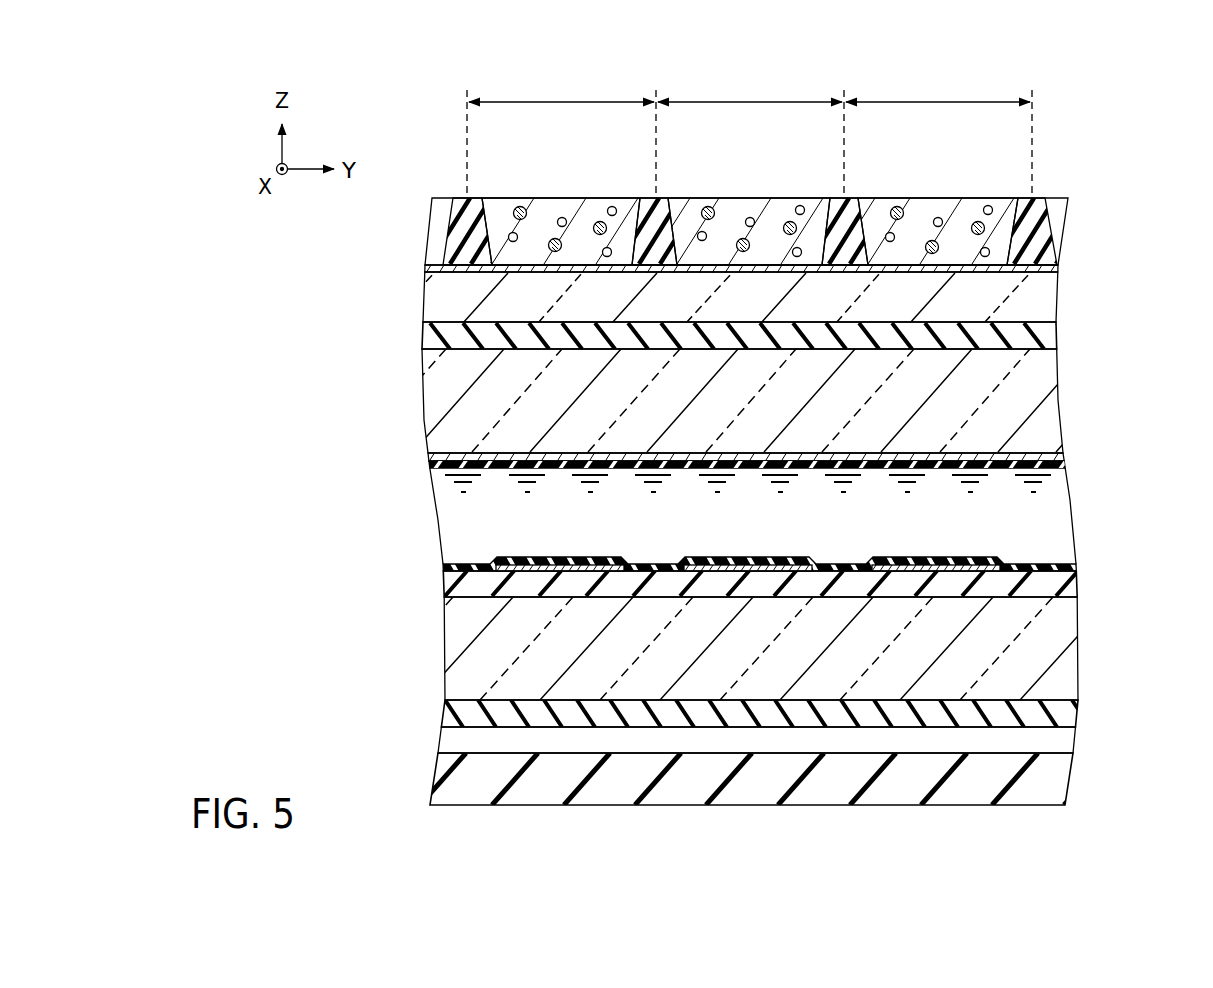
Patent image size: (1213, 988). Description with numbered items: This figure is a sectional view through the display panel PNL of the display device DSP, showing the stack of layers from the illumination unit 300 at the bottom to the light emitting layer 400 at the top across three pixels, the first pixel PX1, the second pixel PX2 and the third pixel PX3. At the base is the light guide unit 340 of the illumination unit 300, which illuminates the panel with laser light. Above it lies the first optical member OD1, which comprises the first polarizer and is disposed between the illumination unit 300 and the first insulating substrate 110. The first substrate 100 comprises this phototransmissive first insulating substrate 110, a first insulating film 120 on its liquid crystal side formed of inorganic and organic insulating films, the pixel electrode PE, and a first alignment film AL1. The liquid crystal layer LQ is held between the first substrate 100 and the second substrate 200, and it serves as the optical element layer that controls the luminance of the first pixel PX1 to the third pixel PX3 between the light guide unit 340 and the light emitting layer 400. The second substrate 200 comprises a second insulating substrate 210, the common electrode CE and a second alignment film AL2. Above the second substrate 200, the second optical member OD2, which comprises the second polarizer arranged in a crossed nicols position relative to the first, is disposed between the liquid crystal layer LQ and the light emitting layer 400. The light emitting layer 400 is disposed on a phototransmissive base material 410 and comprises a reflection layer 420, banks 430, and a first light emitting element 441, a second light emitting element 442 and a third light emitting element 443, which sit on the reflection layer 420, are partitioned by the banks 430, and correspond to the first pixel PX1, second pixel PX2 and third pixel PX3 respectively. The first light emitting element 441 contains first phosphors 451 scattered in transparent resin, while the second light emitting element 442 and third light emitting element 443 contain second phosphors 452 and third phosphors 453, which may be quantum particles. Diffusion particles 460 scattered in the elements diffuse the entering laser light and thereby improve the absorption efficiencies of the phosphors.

The display device DSP is at (1143, 124).
The display panel PNL is at (296, 445).
The first pixel PX1 is at (561, 135).
The second pixel PX2 is at (751, 135).
The third pixel PX3 is at (939, 135).
The light emitting layer 400 is at (410, 229).
The first light emitting element 441 is at (498, 188).
The second light emitting element 442 is at (687, 188).
The third light emitting element 443 is at (874, 188).
The bank 430 is at (462, 197).
The first phosphors 451 is at (523, 208).
The second phosphors 452 is at (711, 208).
The third phosphors 453 is at (899, 208).
The diffusion particles 460 is at (567, 206).
The reflection layer 420 is at (1059, 268).
The phototransmissive base material 410 is at (1047, 301).
The second optical member OD2 is at (1048, 338).
The second substrate 200 is at (410, 398).
The second insulating substrate 210 is at (1047, 414).
The common electrode CE is at (1066, 457).
The second alignment film AL2 is at (1066, 465).
The liquid crystal layer LQ is at (407, 505).
The pixel electrode PE is at (986, 557).
The first alignment film AL1 is at (1078, 568).
The first insulating film 120 is at (1076, 590).
The first substrate 100 is at (407, 637).
The first insulating substrate 110 is at (1073, 666).
The first optical member OD1 is at (1071, 719).
The illumination unit 300 is at (407, 771).
The light guide unit 340 is at (1061, 771).